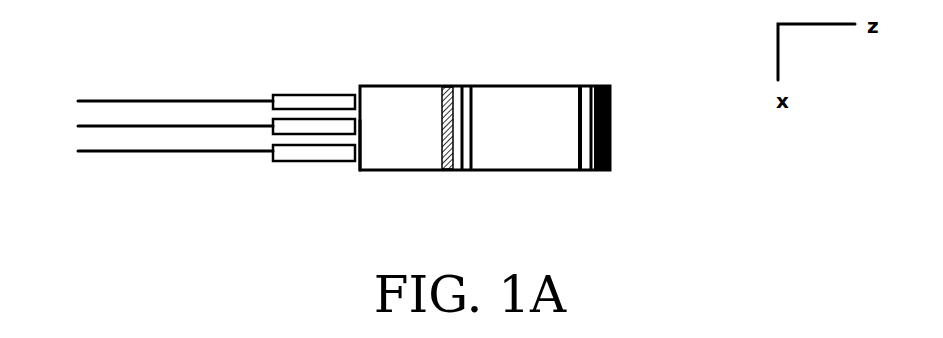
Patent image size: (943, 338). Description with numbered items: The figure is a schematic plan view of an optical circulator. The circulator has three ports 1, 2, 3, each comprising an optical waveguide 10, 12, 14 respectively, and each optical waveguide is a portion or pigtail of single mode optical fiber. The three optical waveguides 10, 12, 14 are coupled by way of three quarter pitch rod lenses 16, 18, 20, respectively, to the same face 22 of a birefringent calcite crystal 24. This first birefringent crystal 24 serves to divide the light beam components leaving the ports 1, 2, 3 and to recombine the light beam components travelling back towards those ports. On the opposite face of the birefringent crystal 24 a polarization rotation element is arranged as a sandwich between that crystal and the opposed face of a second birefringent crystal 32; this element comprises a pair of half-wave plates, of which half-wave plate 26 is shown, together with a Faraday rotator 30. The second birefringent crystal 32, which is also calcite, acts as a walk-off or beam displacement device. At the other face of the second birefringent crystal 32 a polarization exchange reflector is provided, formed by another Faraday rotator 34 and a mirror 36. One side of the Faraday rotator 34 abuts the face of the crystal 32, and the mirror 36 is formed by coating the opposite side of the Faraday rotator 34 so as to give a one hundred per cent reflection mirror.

The port 1 is at (159, 83).
The port 2 is at (159, 92).
The port 3 is at (159, 180).
The optical waveguide 10 is at (128, 100).
The optical waveguide 12 is at (190, 125).
The optical waveguide 14 is at (150, 152).
The quarter pitch rod lens 16 is at (300, 100).
The quarter pitch rod lens 18 is at (318, 127).
The quarter pitch rod lens 20 is at (303, 157).
The face of birefringent calcite crystal 22 is at (360, 168).
The birefringent calcite crystal 24 is at (404, 110).
The half-wave plate 26 is at (447, 170).
The Faraday rotator 30 is at (464, 170).
The second birefringent crystal 32 is at (533, 87).
The Faraday rotator 34 is at (592, 170).
The mirror 36 is at (605, 172).